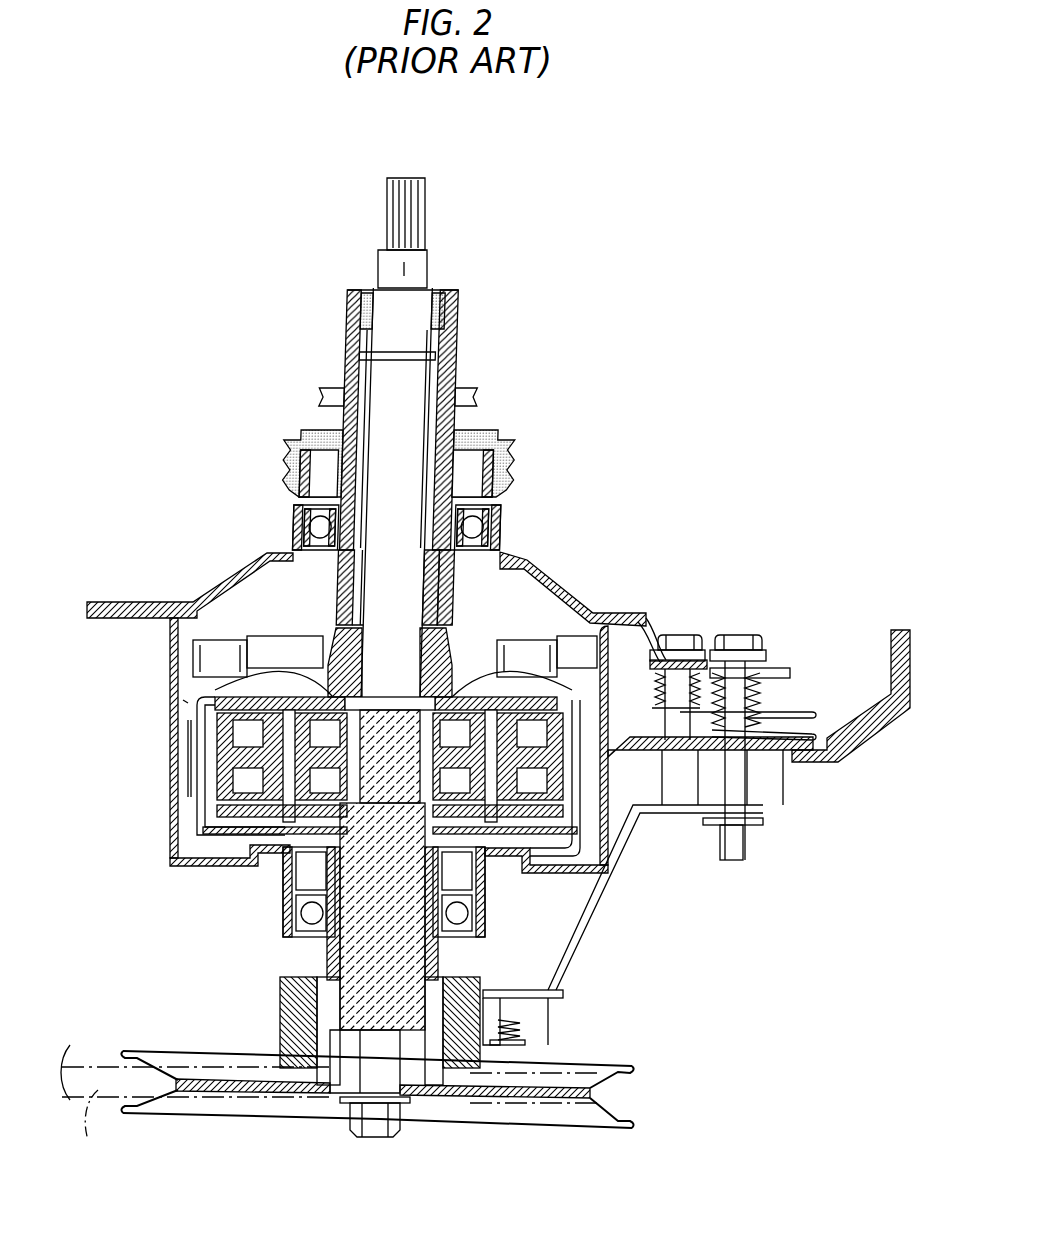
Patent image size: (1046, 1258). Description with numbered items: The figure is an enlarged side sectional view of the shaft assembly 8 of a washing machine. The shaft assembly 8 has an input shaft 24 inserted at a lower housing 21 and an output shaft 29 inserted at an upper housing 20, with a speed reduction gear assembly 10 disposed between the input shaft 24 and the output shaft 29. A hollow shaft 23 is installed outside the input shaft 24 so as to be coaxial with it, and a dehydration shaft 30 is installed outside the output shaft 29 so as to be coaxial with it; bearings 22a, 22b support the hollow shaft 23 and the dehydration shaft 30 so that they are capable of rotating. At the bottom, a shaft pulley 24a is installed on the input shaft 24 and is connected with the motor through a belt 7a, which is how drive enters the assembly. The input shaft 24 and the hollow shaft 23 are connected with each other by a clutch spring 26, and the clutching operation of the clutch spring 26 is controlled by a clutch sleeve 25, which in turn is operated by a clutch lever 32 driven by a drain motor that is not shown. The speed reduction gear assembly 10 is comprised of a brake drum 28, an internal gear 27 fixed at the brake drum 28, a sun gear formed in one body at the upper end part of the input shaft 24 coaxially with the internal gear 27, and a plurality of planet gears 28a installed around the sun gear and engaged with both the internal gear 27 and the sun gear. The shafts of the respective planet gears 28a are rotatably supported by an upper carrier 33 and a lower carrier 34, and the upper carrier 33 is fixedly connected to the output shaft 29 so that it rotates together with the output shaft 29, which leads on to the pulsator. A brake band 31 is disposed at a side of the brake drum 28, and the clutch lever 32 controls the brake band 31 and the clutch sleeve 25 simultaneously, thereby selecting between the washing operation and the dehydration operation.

The belt 7a is at (95, 1090).
The shaft assembly 8 is at (640, 451).
The speed reduction gear assembly 10 is at (184, 702).
The upper housing 20 is at (195, 600).
The lower housing 21 is at (170, 845).
The bearing 22a is at (288, 905).
The bearing 22b is at (300, 520).
The hollow shaft 23 is at (490, 950).
The input shaft 24 is at (368, 980).
The shaft pulley 24a is at (632, 1120).
The clutch sleeve 25 is at (537, 1007).
The clutch spring 26 is at (430, 1095).
The internal gear 27 is at (640, 625).
The brake drum 28 is at (460, 695).
The planet gears 28a is at (240, 680).
The output shaft 29 is at (410, 375).
The dehydration shaft 30 is at (458, 420).
The brake band 31 is at (188, 740).
The clutch lever 32 is at (905, 630).
The upper carrier 33 is at (437, 655).
The lower carrier 34 is at (525, 822).